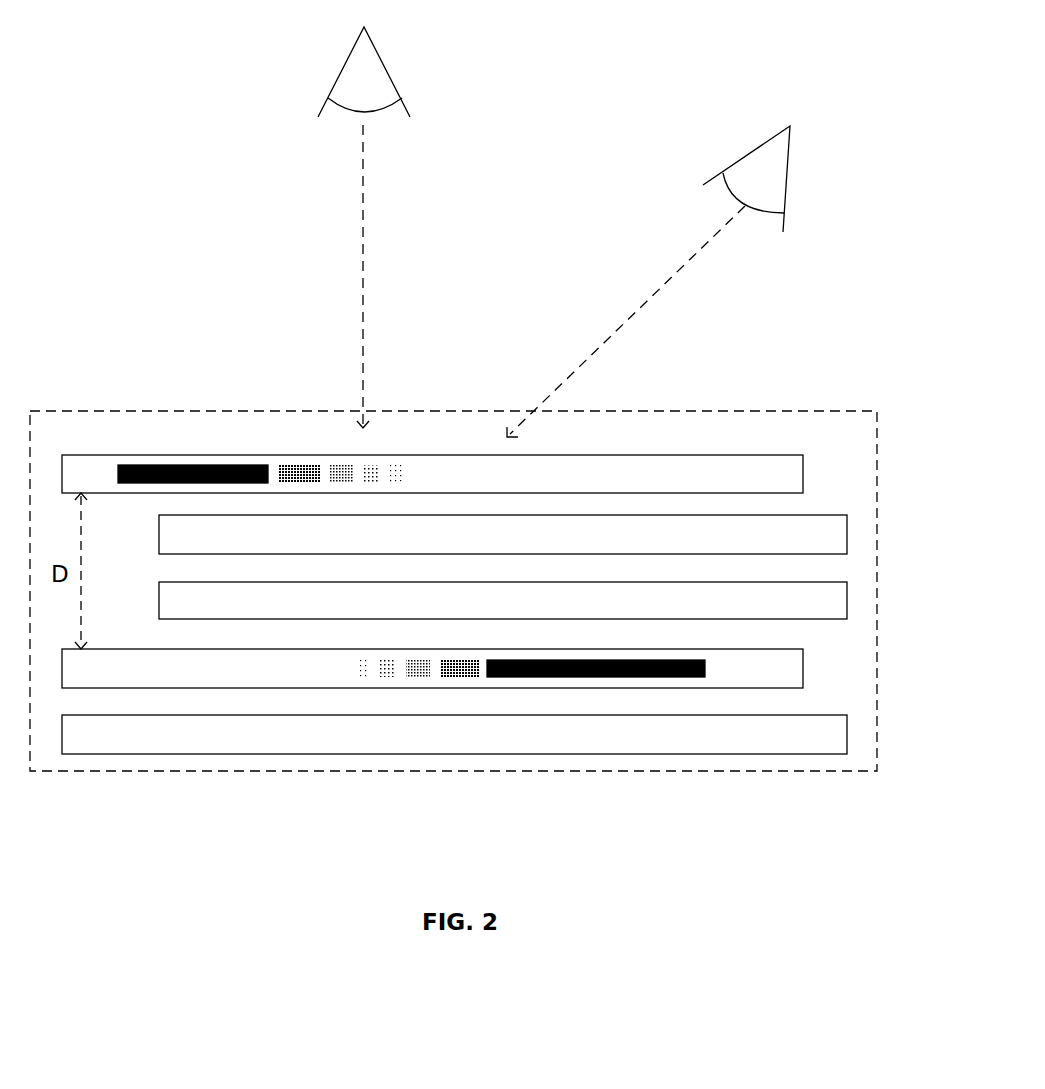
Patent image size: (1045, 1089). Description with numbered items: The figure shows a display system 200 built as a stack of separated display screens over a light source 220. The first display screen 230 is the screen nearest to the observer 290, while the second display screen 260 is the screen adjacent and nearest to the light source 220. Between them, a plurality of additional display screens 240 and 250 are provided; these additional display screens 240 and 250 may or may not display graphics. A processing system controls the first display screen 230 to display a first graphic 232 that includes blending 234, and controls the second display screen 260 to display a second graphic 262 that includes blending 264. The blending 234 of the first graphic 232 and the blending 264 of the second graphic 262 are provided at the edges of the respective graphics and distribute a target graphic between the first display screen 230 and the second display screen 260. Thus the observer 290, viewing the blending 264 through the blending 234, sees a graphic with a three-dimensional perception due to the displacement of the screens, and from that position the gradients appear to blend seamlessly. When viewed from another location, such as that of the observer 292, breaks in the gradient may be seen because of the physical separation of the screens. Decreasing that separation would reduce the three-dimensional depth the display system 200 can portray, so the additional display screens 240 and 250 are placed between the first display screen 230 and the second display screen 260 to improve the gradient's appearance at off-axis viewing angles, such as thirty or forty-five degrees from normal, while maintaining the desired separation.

The display system 200 is at (252, 266).
The light source 220 is at (847, 735).
The first display screen 230 is at (803, 469).
The first graphic 232 is at (178, 465).
The blending 234 is at (325, 438).
The additional display screen 240 is at (847, 538).
The additional display screen 250 is at (847, 597).
The second display screen 260 is at (803, 668).
The second graphic 262 is at (643, 678).
The blending 264 is at (447, 685).
The observer 290 is at (338, 72).
The observer 292 is at (762, 143).